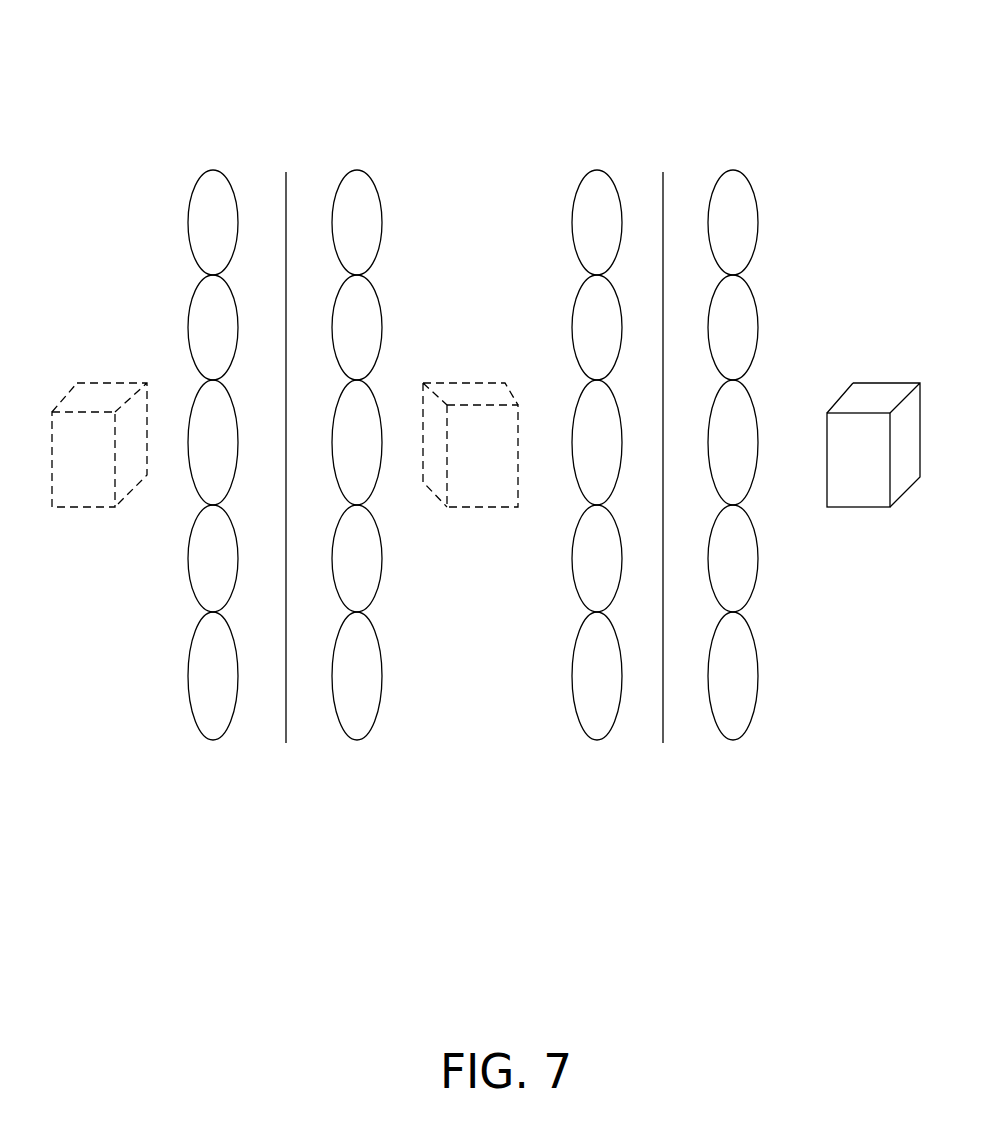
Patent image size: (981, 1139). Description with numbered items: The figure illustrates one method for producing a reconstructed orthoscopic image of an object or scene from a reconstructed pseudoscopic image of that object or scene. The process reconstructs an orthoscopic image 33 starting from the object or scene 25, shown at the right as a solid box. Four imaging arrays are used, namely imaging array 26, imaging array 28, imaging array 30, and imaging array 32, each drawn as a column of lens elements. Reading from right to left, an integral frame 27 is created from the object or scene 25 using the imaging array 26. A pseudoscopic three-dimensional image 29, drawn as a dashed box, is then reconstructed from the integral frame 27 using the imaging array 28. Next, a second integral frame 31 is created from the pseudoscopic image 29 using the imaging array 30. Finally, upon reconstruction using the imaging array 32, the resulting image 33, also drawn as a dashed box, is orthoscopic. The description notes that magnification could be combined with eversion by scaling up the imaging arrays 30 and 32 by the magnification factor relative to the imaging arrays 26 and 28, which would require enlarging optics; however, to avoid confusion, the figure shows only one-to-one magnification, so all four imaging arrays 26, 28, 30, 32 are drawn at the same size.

The object or scene 25 is at (852, 558).
The imaging array 26 is at (758, 197).
The integral frame 27 is at (662, 210).
The imaging array 28 is at (572, 198).
The pseudoscopic three-dimensional image 29 is at (474, 558).
The imaging array 30 is at (378, 198).
The second integral frame 31 is at (285, 210).
The imaging array 32 is at (188, 210).
The orthoscopic image 33 is at (76, 557).